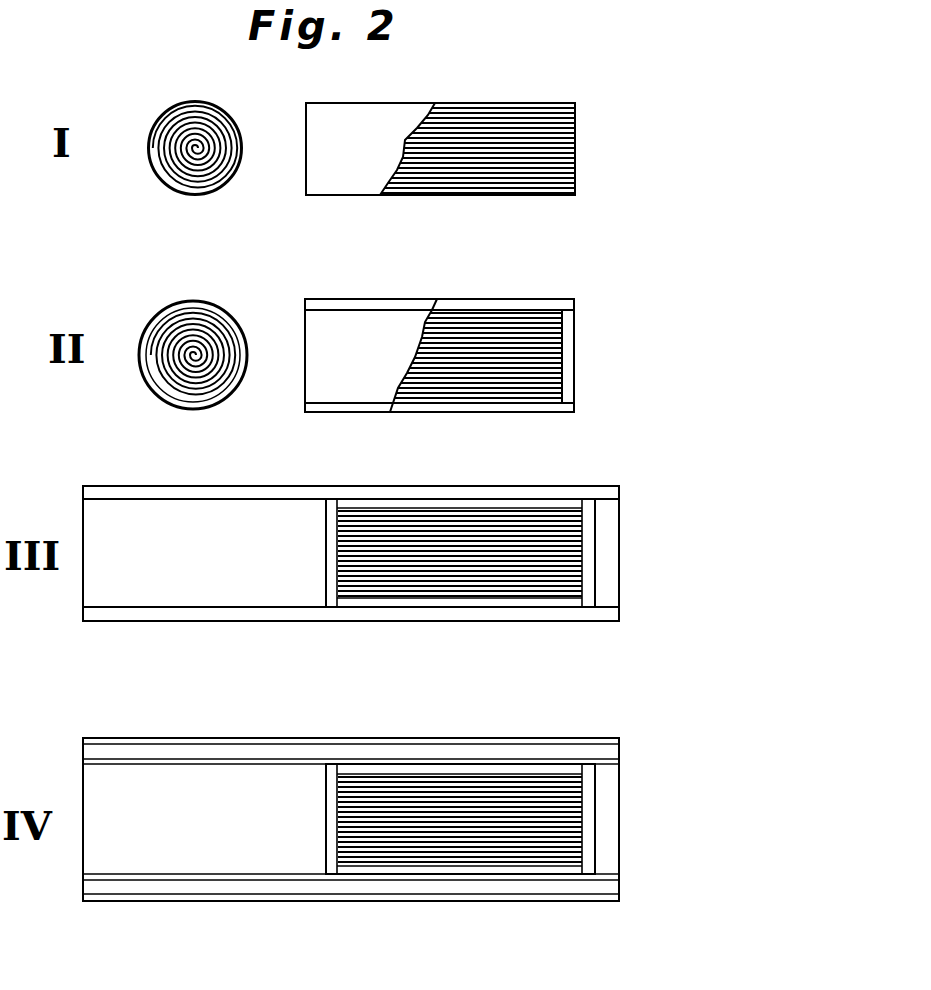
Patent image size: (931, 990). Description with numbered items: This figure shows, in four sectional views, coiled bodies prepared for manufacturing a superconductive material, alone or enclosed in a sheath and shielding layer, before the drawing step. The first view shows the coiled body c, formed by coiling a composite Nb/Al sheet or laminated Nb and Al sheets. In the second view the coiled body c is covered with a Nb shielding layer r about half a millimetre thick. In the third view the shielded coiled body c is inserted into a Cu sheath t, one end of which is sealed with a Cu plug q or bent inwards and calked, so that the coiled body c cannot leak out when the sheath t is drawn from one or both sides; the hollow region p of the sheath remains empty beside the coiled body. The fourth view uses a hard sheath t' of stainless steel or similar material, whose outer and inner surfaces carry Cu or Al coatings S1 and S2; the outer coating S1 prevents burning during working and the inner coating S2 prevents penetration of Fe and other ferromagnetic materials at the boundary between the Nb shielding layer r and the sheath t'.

The coiled body c is at (232, 131).
The Nb shielding layer r is at (220, 308).
The pipe p is at (150, 515).
The Cu plug q is at (610, 558).
The Cu sheath t is at (351, 531).
The hard sheath t' is at (351, 796).
The outer coating S1 is at (540, 742).
The inner coating S2 is at (438, 762).